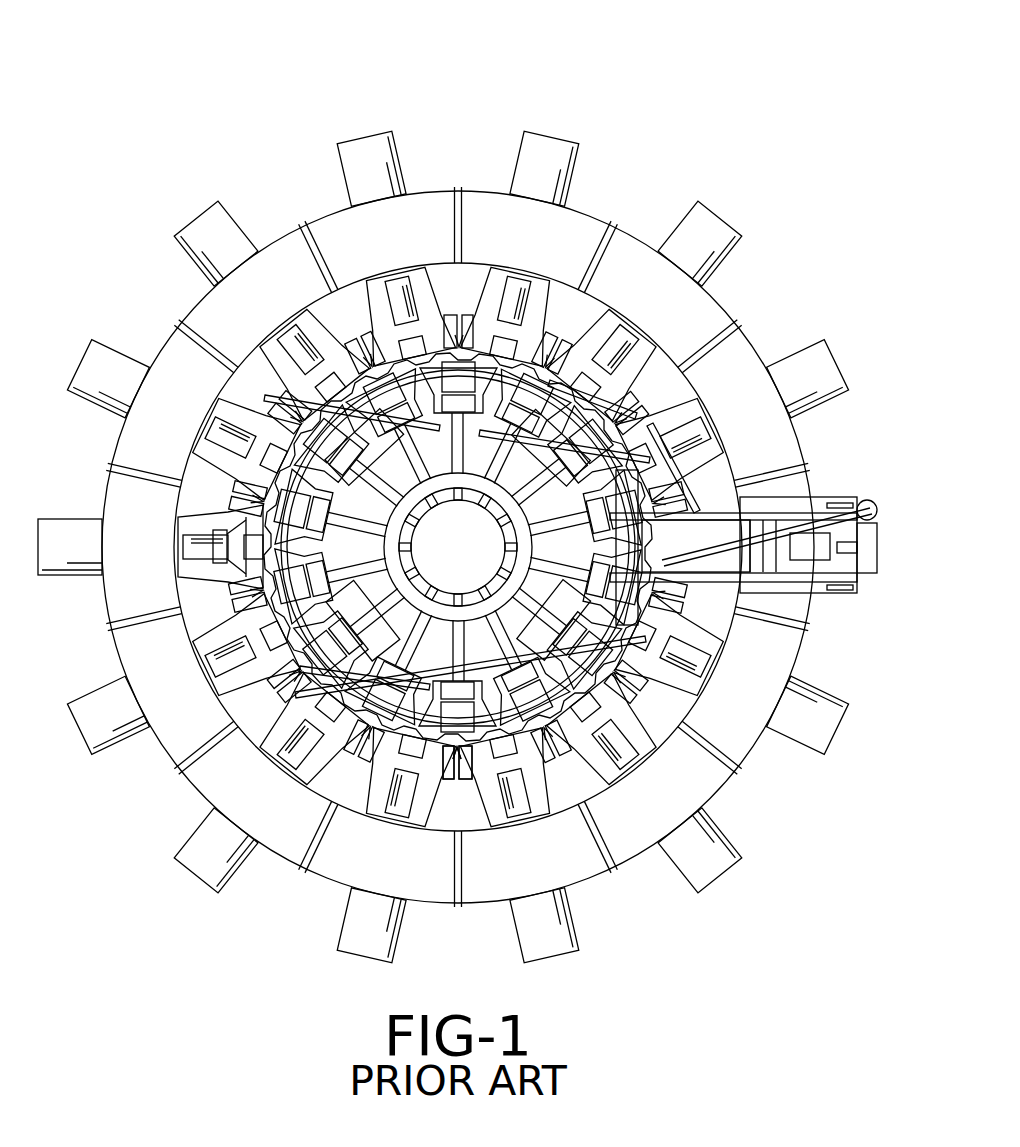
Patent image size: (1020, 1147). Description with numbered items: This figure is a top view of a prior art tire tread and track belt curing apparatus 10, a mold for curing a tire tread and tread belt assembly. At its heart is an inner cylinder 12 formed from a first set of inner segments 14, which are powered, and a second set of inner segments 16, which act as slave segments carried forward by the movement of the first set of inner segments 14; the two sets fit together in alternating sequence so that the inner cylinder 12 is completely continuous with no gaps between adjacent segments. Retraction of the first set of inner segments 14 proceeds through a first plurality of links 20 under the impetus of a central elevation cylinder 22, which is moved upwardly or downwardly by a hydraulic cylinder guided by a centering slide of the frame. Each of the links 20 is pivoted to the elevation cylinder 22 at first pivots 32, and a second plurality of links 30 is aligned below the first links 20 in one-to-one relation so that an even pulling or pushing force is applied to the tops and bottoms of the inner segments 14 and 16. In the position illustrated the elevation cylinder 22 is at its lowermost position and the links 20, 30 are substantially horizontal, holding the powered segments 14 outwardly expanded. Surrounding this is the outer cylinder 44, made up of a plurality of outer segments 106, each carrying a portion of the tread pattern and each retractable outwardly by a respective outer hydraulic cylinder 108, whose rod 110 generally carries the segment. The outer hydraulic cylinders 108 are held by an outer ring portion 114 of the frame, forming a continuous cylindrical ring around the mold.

The prior art tire tread and track belt curing apparatus 10 is at (142, 116).
The inner cylinder 12 is at (460, 747).
The first set of inner segments 14 is at (500, 340).
The second set of inner segments 16 is at (533, 398).
The first plurality of links 20 is at (444, 443).
The elevation cylinder 22 is at (444, 560).
The second plurality of links 30 is at (330, 407).
The first pivots 32 is at (377, 337).
The outer cylinder 44 is at (440, 750).
The outer segments 106 is at (460, 372).
The outer hydraulic cylinders 108 is at (355, 165).
The rod 110 is at (190, 545).
The outer ring portion 114 is at (275, 268).